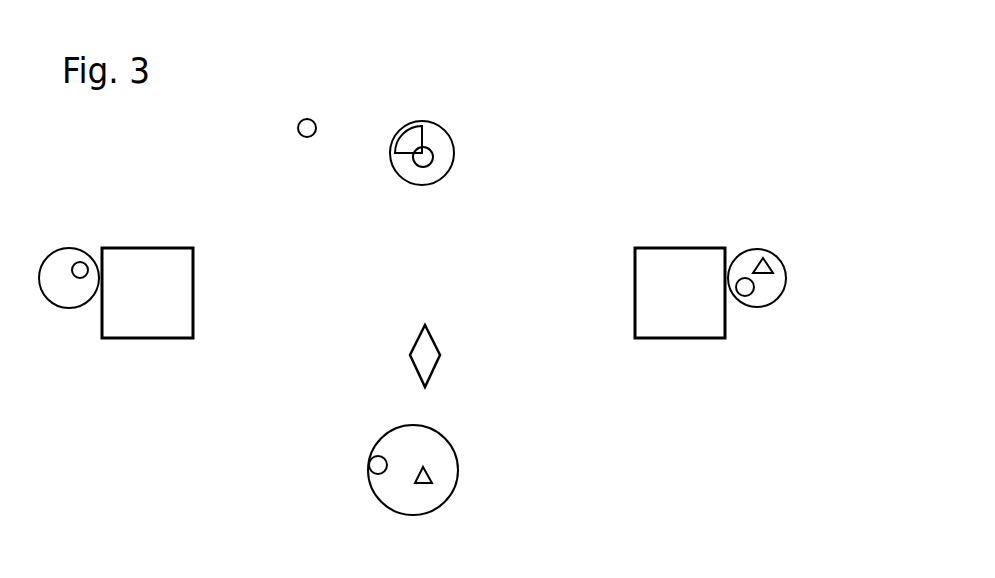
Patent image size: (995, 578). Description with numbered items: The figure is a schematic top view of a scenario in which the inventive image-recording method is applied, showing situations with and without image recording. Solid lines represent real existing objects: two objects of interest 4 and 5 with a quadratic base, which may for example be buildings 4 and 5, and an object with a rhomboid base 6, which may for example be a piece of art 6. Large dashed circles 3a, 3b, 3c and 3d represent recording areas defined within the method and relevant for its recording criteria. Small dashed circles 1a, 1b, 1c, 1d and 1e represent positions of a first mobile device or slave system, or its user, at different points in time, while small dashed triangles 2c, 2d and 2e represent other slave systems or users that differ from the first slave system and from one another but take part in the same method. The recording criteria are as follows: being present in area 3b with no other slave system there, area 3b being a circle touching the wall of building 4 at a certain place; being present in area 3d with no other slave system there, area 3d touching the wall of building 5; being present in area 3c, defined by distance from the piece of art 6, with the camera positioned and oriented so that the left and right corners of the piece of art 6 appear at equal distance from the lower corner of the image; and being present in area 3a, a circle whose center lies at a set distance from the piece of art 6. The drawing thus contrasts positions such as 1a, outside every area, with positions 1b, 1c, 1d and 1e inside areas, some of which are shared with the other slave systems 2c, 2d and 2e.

The position of first mobile device 1a is at (315, 117).
The position of first mobile device 1b is at (83, 262).
The position of first mobile device 1c is at (372, 472).
The position of first mobile device 1d is at (750, 292).
The position of first mobile device 1e is at (432, 165).
The other slave system 2c is at (432, 478).
The other slave system 2d is at (770, 260).
The other slave system 2e is at (410, 138).
The recording area 3a is at (443, 122).
The recording area 3b is at (55, 310).
The recording area 3c is at (457, 447).
The recording area 3d is at (788, 285).
The object of interest 4 is at (195, 248).
The object of interest 5 is at (630, 255).
The object with rhomboid base 6 is at (412, 338).